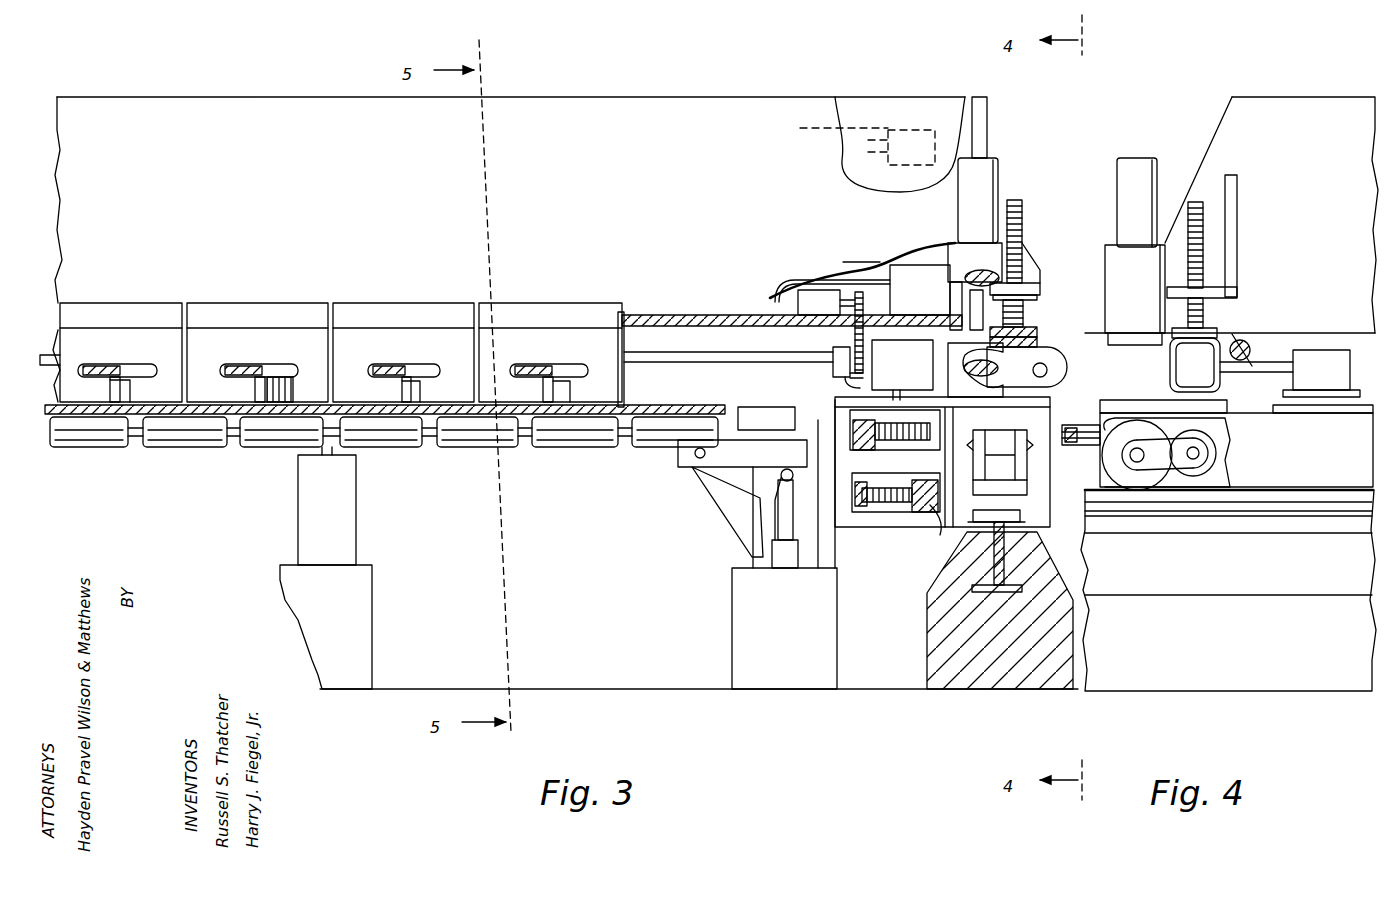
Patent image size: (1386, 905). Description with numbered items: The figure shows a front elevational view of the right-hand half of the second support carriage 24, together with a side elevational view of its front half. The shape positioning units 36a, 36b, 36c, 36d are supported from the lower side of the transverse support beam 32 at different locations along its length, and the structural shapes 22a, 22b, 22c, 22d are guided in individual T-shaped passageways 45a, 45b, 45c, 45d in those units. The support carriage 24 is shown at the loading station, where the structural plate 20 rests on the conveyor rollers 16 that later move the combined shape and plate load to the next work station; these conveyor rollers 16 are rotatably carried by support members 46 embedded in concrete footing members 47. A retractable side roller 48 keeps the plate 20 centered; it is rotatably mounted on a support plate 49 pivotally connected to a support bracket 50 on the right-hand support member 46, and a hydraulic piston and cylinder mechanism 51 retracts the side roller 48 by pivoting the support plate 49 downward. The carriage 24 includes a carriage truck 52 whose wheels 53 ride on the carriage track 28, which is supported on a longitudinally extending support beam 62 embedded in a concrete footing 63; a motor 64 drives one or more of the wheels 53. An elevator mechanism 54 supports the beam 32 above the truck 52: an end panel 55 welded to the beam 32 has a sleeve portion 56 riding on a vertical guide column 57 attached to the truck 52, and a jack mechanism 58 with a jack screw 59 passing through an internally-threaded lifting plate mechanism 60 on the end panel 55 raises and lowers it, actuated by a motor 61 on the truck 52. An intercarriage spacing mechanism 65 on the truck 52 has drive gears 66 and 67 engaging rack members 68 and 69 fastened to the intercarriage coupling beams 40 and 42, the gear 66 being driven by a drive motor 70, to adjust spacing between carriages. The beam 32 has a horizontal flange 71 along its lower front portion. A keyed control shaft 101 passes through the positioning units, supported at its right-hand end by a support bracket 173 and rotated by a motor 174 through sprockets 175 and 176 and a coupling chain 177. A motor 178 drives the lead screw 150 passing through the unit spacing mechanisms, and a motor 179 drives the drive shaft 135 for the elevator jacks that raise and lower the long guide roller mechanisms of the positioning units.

In FIG. 3, the conveyor rollers 16 is at (190, 440).
In FIG. 3, the structural plate 20 is at (638, 405).
In FIG. 3, the structural shape 22a is at (545, 366).
In FIG. 3, the structural shape 22b is at (388, 366).
In FIG. 3, the structural shape 22c is at (242, 368).
In FIG. 3, the structural shape 22d is at (107, 366).
In FIG. 3, the support carriage 24 is at (622, 97).
In FIG. 4, the support carriage 24 is at (1288, 95).
In FIG. 3, the carriage track 28 is at (1010, 512).
In FIG. 4, the carriage track 28 is at (1296, 516).
In FIG. 3, the transverse support beam 32 is at (147, 97).
In FIG. 3, the shape positioning unit 36a is at (540, 303).
In FIG. 3, the shape positioning unit 36b is at (392, 303).
In FIG. 3, the shape positioning unit 36c is at (249, 303).
In FIG. 3, the shape positioning unit 36d is at (95, 303).
In FIG. 3, the intercarriage coupling beam 40 is at (856, 425).
In FIG. 4, the intercarriage coupling beam 40 is at (1077, 425).
In FIG. 3, the lower intercarriage coupling beam 42 is at (933, 512).
In FIG. 3, the T-shaped passageway 45a is at (575, 373).
In FIG. 3, the T-shaped passageway 45b is at (440, 368).
In FIG. 3, the T-shaped passageway 45c is at (298, 370).
In FIG. 3, the T-shaped passageway 45d is at (150, 372).
In FIG. 3, the support members 46 is at (356, 518).
In FIG. 3, the concrete footing members 47 is at (372, 620).
In FIG. 3, the side roller 48 is at (760, 408).
In FIG. 3, the support plate 49 is at (715, 466).
In FIG. 3, the support bracket 50 is at (735, 512).
In FIG. 3, the hydraulic piston and cylinder mechanism 51 is at (775, 527).
In FIG. 3, the carriage truck 52 is at (1027, 486).
In FIG. 4, the carriage truck 52 is at (1229, 445).
In FIG. 3, the wheels 53 is at (1000, 440).
In FIG. 4, the wheels 53 is at (1137, 493).
In FIG. 3, the elevator mechanism 54 is at (1010, 170).
In FIG. 4, the elevator mechanism 54 is at (1180, 152).
In FIG. 3, the end panel 55 is at (985, 130).
In FIG. 4, the end panel 55 is at (1232, 120).
In FIG. 3, the sleeve portion 56 is at (948, 256).
In FIG. 4, the sleeve portion 56 is at (1105, 262).
In FIG. 3, the vertical guide column 57 is at (958, 209).
In FIG. 4, the vertical guide column 57 is at (1117, 175).
In FIG. 3, the jack mechanism 58 is at (1045, 347).
In FIG. 4, the jack mechanism 58 is at (1195, 365).
In FIG. 3, the jack screw 59 is at (1020, 210).
In FIG. 4, the jack screw 59 is at (1203, 232).
In FIG. 3, the lifting plate mechanism 60 is at (1040, 290).
In FIG. 4, the lifting plate mechanism 60 is at (1218, 293).
In FIG. 4, the motor 61 is at (1318, 333).
In FIG. 3, the longitudinally extending support beam 62 is at (1018, 523).
In FIG. 3, the concrete footing 63 is at (930, 620).
In FIG. 4, the concrete footing 63 is at (1228, 617).
In FIG. 4, the motor 64 is at (1230, 451).
In FIG. 3, the intercarriage spacing mechanism 65 is at (900, 530).
In FIG. 3, the drive gear 66 is at (910, 442).
In FIG. 3, the drive gear 67 is at (866, 512).
In FIG. 3, the rack member 68 is at (866, 452).
In FIG. 4, the rack member 68 is at (1078, 446).
In FIG. 3, the rack member 69 is at (918, 520).
In FIG. 3, the drive motor 70 is at (902, 370).
In FIG. 3, the horizontal flange 71 is at (640, 316).
In FIG. 3, the keyed control shaft 101 is at (652, 357).
In FIG. 3, the drive shaft 135 is at (800, 128).
In FIG. 3, the lead screw 150 is at (810, 281).
In FIG. 3, the support bracket 173 is at (830, 365).
In FIG. 4, the support bracket 173 is at (1232, 372).
In FIG. 3, the motor 174 is at (798, 300).
In FIG. 3, the sprocket 175 is at (860, 262).
In FIG. 3, the sprocket 176 is at (850, 372).
In FIG. 3, the coupling chain 177 is at (855, 330).
In FIG. 3, the motor 178 is at (890, 275).
In FIG. 3, the motor 179 is at (902, 128).